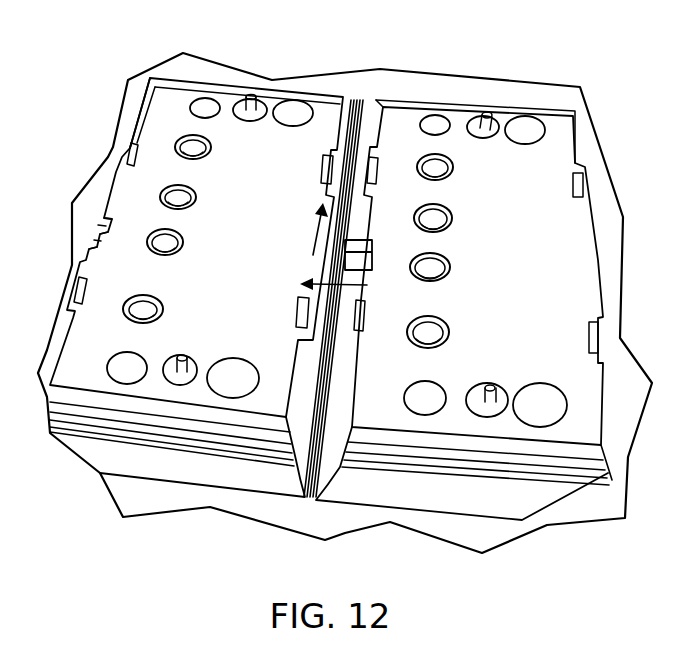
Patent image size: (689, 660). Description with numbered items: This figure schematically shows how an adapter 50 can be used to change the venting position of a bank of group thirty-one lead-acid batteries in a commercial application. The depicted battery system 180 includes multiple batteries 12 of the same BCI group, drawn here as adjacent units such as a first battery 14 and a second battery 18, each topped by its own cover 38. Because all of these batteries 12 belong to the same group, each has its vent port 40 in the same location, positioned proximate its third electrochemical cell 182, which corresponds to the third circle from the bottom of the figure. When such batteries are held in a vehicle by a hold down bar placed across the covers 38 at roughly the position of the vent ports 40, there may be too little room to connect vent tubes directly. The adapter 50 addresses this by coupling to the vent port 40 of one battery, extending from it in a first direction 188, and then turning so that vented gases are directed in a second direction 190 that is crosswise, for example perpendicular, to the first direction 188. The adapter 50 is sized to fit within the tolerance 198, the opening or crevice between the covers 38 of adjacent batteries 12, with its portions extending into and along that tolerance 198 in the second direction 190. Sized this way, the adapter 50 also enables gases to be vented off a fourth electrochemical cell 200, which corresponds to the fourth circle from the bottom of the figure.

The battery 12 is at (578, 108).
The first battery 14 is at (395, 115).
The second battery 18 is at (325, 107).
The cover 38 is at (217, 127).
The vent port 40 is at (88, 240).
The adapter 50 is at (373, 247).
The battery system 180 is at (382, 60).
The third electrochemical cell 182 is at (468, 273).
The first direction 188 is at (316, 278).
The second direction 190 is at (312, 240).
The tolerance 198 is at (360, 90).
The fourth electrochemical cell 200 is at (465, 209).